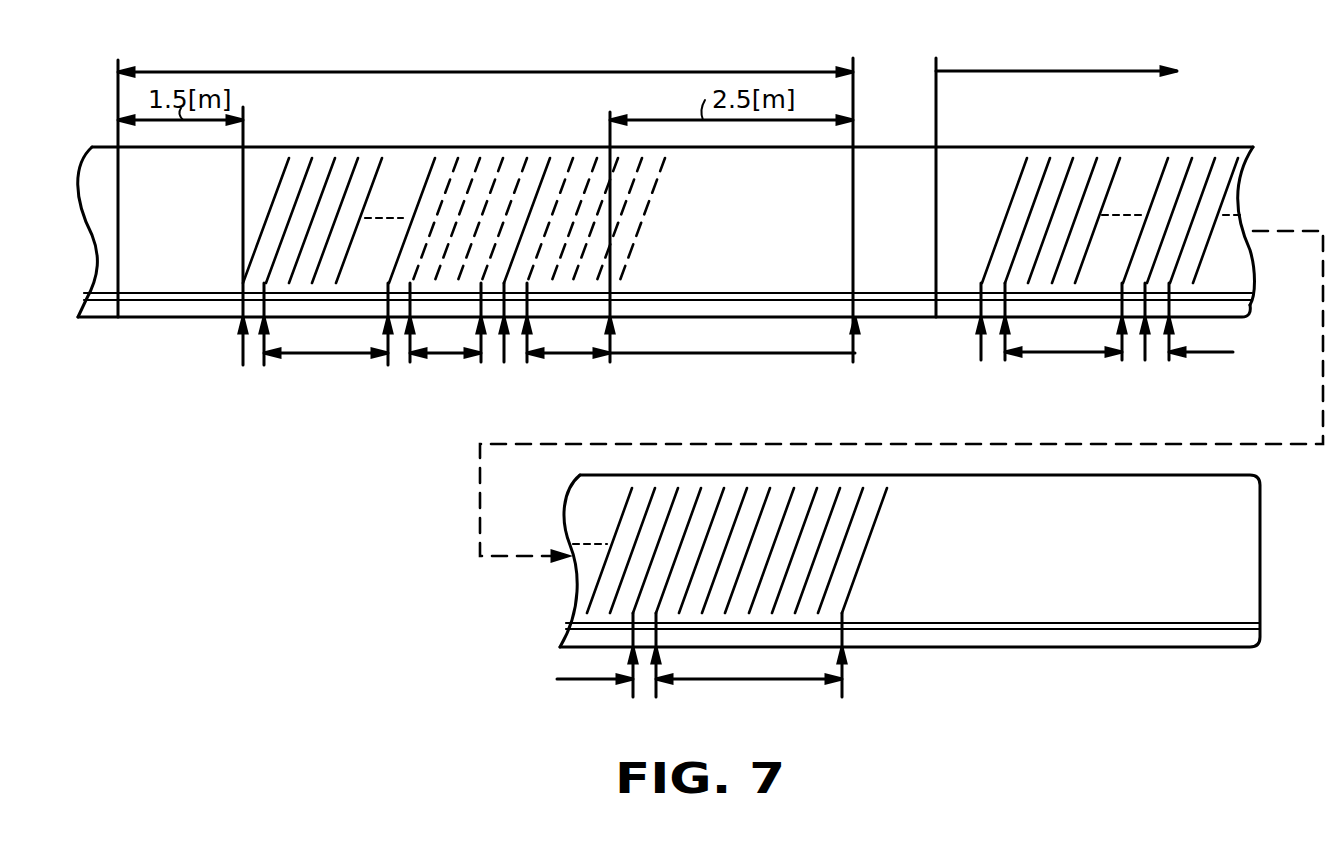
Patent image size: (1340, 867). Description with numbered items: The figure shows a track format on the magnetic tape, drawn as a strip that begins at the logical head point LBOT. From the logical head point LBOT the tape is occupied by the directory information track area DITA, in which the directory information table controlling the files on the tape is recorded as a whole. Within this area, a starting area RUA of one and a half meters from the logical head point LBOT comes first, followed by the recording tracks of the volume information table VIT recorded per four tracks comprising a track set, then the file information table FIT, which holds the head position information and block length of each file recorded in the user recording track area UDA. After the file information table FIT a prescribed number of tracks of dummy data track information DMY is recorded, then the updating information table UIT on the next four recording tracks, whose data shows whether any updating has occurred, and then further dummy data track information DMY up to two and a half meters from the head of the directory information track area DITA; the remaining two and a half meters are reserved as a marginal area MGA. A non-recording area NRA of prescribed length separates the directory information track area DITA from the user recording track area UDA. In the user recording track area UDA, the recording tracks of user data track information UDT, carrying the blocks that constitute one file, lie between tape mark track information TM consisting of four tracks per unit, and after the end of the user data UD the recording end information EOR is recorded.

The logical head point LBOT is at (133, 174).
The directory information track area DITA is at (477, 72).
The user recording track area UDA is at (1068, 71).
The starting area RUA is at (184, 282).
The volume information table VIT is at (245, 342).
The file information table FIT is at (335, 353).
The dummy data track information DMY is at (447, 353).
The updating information table UIT is at (519, 278).
The marginal area MGA is at (740, 353).
The non-recording area NRA is at (902, 283).
The tape mark track information TM is at (1069, 342).
The user data track information UDT is at (1065, 352).
The user data UD is at (583, 679).
The recording end information EOR is at (760, 679).